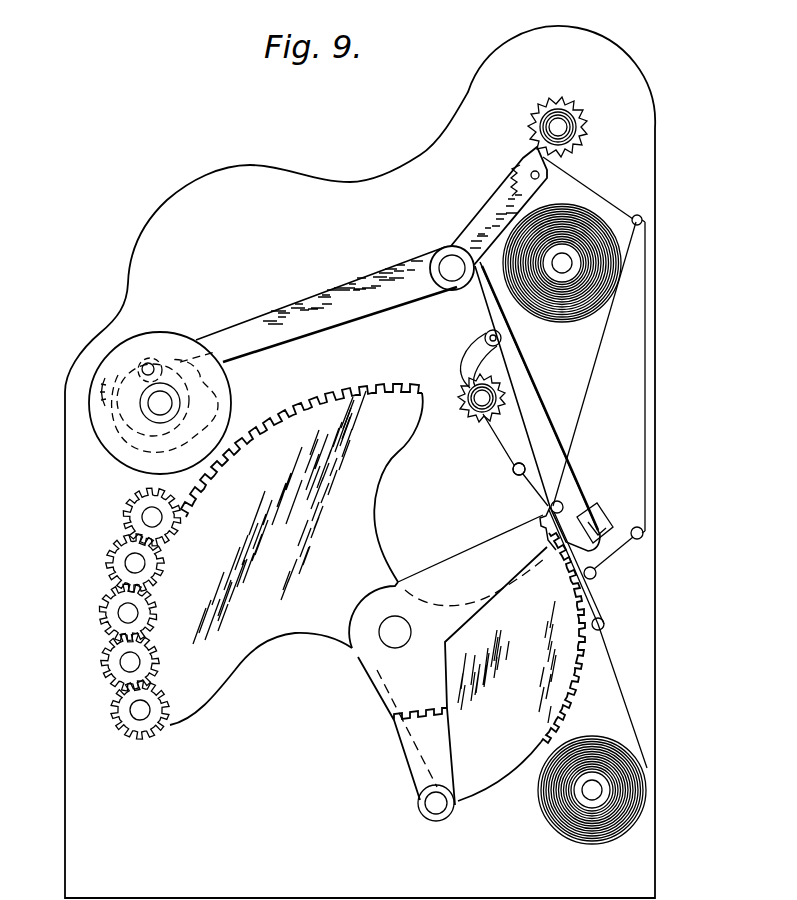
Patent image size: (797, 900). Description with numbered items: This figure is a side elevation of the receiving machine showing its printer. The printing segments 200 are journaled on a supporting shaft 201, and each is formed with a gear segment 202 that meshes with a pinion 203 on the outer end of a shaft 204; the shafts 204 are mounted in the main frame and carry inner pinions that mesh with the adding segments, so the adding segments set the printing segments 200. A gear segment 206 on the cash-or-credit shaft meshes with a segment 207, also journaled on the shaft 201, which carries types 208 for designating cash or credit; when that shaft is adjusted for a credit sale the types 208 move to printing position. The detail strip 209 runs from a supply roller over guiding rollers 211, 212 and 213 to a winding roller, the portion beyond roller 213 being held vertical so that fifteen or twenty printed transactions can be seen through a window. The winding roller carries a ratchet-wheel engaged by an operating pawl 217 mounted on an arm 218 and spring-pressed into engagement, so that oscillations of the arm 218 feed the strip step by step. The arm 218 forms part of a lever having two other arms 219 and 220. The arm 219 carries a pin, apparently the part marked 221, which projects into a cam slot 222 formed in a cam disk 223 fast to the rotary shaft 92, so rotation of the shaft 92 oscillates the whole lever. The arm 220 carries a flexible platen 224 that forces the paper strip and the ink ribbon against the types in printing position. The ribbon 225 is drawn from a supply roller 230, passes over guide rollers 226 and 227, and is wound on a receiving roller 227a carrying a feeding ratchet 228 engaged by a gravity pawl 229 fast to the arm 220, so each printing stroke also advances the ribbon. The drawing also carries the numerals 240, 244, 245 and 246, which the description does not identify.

The rotary shaft 92 is at (162, 404).
The printing segments 200 is at (372, 755).
The supporting shaft 201 is at (393, 634).
The gear segment 202 is at (296, 554).
The pinions 203 is at (118, 547).
The shafts 204 is at (132, 660).
The gear segment 206 is at (436, 805).
The segment 207 is at (403, 698).
The types 208 is at (540, 543).
The detail strip 209 is at (645, 403).
The guiding roller 211 is at (561, 503).
The guiding roller 212 is at (594, 577).
The guiding roller 213 is at (643, 533).
The operating pawl 217 is at (527, 165).
The arm 218 is at (487, 211).
The arm 219 is at (343, 297).
The arm 220 is at (496, 325).
The pivot pin 221 is at (150, 363).
The cam slot 222 is at (173, 367).
The cam disk 223 is at (112, 357).
The flexible platen 224 is at (604, 513).
The ribbon 225 is at (512, 470).
The guide roller 226 is at (487, 482).
The guide roller 227 is at (604, 623).
The receiving roller 227a is at (481, 414).
The feeding ratchet 228 is at (475, 405).
The gravity pawl 229 is at (460, 357).
The supply roller 230 is at (580, 807).
The spring 240 is at (566, 316).
The pin 244 is at (642, 220).
The shaft 245 is at (563, 132).
The ratchet wheel 246 is at (548, 105).